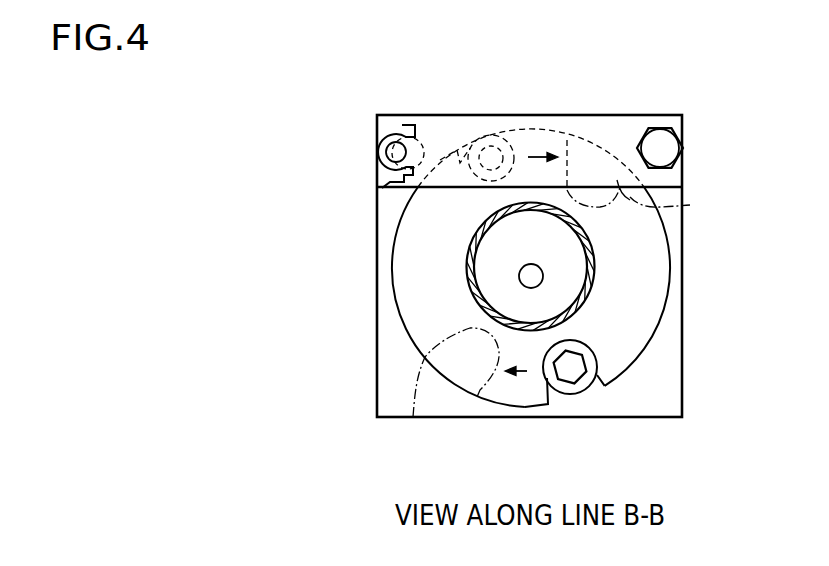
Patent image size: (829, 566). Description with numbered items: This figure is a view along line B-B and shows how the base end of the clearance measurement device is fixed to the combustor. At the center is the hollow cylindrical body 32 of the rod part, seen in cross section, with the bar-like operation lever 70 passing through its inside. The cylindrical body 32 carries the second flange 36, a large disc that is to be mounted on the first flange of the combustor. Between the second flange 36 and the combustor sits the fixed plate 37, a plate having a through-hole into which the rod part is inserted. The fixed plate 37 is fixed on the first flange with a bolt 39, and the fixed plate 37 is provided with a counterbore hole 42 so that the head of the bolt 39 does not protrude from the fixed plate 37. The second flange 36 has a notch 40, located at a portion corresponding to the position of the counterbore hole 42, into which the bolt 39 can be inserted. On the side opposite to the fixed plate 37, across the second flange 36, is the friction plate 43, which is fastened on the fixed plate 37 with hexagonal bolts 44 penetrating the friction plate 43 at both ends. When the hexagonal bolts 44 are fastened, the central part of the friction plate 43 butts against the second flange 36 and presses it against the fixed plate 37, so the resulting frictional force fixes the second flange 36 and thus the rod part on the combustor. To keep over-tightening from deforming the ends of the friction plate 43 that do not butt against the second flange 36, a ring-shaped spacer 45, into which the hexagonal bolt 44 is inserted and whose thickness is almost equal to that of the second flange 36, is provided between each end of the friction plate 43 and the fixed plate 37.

The cylindrical body 32 is at (594, 255).
The second flange 36 is at (650, 302).
The fixed plate 37 is at (663, 348).
The bolt 39 is at (493, 147).
The notch 40 is at (542, 130).
The counterbore hole 42 is at (470, 140).
The friction plate 43 is at (613, 130).
The hexagonal bolt 44 is at (658, 148).
The spacer 45 is at (395, 133).
The operation lever 70 is at (519, 277).